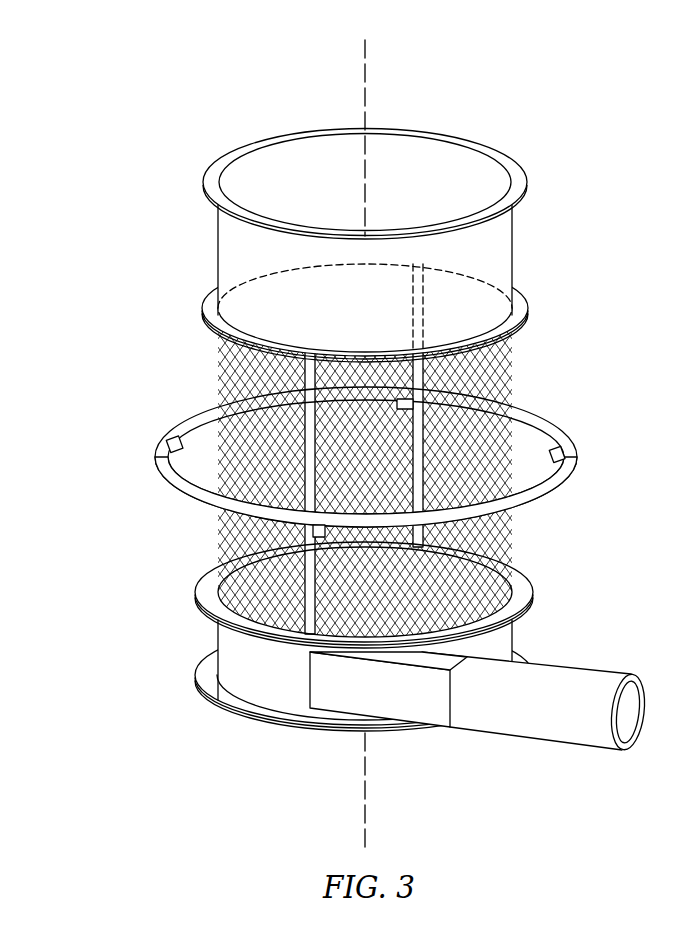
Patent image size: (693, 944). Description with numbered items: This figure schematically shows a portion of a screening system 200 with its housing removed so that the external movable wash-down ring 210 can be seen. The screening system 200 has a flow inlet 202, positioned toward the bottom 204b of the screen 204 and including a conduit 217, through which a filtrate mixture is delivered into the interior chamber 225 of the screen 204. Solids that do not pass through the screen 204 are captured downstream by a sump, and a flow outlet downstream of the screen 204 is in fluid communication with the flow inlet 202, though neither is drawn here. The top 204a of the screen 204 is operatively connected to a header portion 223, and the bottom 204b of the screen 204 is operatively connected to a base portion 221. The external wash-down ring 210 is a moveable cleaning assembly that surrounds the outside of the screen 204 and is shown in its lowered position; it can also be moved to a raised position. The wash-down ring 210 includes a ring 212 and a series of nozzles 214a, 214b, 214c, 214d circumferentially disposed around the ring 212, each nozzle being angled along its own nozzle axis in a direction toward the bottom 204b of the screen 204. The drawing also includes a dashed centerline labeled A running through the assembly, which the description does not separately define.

The screening system 200 is at (576, 92).
The flow inlet 202 is at (499, 658).
The screen 204 is at (514, 380).
The top of the screen 204a is at (217, 356).
The bottom of the screen 204b is at (215, 580).
The external movable wash-down ring 210 is at (573, 413).
The ring 212 is at (532, 495).
The nozzle 214a is at (563, 455).
The nozzle 214b is at (313, 530).
The nozzle 214c is at (168, 448).
The nozzle 214d is at (405, 402).
The conduit 217 is at (557, 732).
The base portion 221 is at (233, 642).
The header portion 223 is at (243, 152).
The interior chamber 225 is at (230, 423).
The central axis A is at (365, 50).